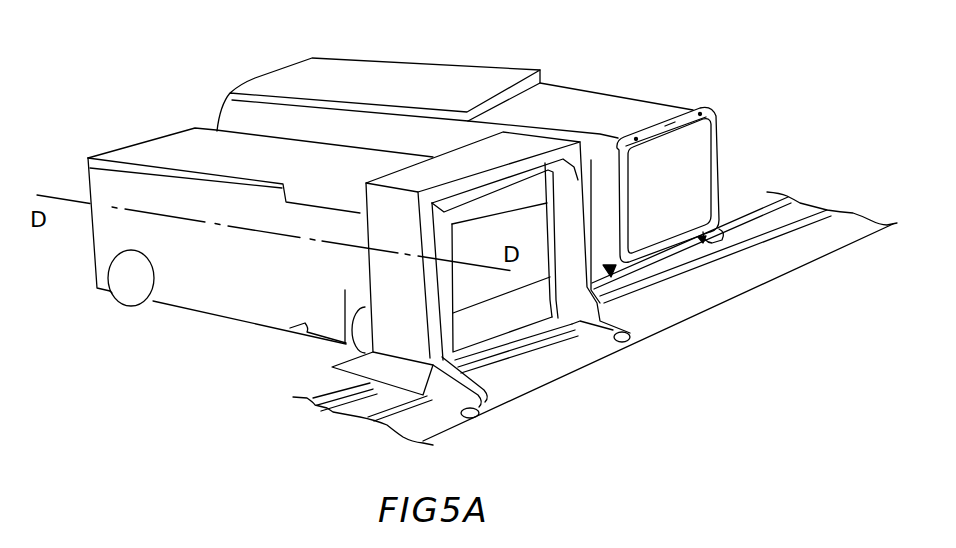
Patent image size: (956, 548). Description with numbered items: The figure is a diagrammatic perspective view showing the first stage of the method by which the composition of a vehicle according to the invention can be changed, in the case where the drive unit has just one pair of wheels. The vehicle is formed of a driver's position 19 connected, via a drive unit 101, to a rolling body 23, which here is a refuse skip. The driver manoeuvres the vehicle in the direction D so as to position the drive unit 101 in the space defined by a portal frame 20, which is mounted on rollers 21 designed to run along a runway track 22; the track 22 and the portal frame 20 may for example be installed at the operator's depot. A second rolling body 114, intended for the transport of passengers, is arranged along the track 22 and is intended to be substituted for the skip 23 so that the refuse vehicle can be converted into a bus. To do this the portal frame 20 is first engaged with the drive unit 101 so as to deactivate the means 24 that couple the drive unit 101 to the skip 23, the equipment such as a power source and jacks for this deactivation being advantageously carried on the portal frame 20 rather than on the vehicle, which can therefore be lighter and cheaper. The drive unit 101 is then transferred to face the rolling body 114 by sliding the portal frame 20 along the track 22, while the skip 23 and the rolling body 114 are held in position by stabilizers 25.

The rolling body 23 is at (145, 148).
The rolling body 114 is at (605, 95).
The coupling means 24 is at (693, 107).
The stabilizers 25 is at (727, 226).
The runway track 22 is at (803, 248).
The portal frame 20 is at (614, 273).
The rollers 21 is at (632, 343).
The driver's position 19 is at (513, 308).
The drive unit 101 is at (353, 288).